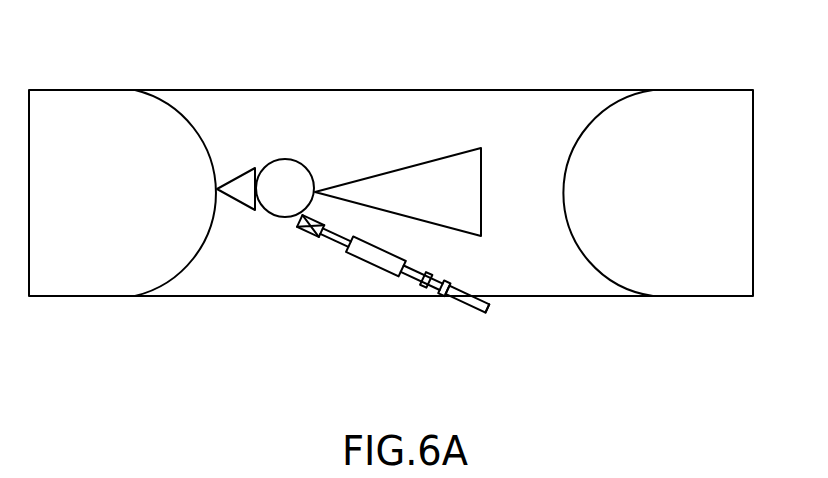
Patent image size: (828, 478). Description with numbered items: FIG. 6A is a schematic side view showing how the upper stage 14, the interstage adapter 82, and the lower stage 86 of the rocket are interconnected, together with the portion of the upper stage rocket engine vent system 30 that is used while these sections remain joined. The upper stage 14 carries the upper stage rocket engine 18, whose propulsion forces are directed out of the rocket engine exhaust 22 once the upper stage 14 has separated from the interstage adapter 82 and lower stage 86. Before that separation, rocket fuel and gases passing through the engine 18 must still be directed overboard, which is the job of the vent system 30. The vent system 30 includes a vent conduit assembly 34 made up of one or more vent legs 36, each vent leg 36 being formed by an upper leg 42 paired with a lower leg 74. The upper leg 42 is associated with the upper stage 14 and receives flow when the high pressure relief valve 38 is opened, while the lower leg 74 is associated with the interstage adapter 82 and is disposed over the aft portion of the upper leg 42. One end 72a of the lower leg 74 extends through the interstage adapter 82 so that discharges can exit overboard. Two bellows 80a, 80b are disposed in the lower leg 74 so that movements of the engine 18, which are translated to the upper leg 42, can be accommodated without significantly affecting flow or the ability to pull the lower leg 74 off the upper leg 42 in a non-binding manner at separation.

The upper stage 14 is at (203, 135).
The upper stage rocket engine 18 is at (349, 170).
The rocket engine exhaust 22 is at (437, 158).
The upper stage rocket engine vent system 30 is at (413, 280).
The vent conduit assembly 34 is at (443, 280).
The vent leg 36 is at (420, 267).
The high pressure relief valve 38 is at (310, 240).
The upper leg 42 is at (330, 245).
The lower leg 74 is at (478, 305).
The end of lower leg 72a is at (490, 300).
The bellows 80a is at (425, 290).
The bellows 80b is at (440, 293).
The interstage adapter 82 is at (387, 90).
The lower stage 86 is at (597, 117).